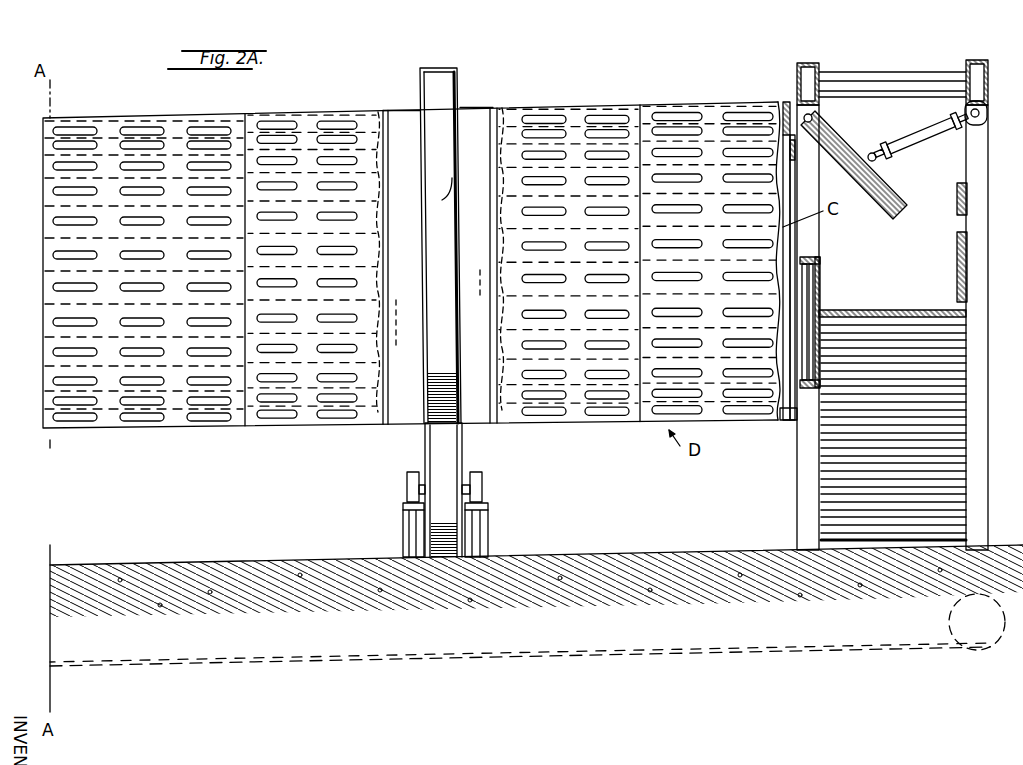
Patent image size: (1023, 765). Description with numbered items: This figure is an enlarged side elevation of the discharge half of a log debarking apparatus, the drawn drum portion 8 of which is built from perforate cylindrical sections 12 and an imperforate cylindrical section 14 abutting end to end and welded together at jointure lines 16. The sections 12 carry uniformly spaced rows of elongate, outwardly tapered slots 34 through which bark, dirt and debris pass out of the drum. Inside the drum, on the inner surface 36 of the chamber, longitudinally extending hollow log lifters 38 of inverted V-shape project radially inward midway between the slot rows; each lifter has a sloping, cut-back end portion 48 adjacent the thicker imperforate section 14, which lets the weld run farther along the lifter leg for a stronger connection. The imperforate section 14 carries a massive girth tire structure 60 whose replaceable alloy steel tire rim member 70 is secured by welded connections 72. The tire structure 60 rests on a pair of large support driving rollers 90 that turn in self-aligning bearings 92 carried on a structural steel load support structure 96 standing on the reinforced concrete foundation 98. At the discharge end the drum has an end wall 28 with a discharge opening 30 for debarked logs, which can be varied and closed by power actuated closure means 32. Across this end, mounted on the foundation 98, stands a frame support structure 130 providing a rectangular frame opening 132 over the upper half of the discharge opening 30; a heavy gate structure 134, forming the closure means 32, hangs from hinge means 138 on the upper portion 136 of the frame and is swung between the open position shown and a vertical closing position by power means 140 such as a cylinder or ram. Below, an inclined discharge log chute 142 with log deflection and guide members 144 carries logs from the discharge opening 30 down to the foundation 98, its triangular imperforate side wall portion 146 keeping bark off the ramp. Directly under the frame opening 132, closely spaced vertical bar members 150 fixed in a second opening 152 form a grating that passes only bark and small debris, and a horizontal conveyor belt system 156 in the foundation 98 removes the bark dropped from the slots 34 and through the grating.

The rotary screen drum 8 is at (75, 203).
The perforate cylindrical section 12 is at (84, 118).
The imperforate cylindrical section 14 is at (402, 114).
The jointure line 16 is at (246, 122).
The end wall 28 is at (788, 100).
The discharge opening 30 is at (789, 177).
The power actuated closure means 32 is at (851, 140).
The slot 34 is at (133, 421).
The inner surface 36 is at (782, 102).
The log lifter 38 is at (385, 245).
The sloping end portion 48 is at (394, 300).
The tire structure 60 is at (443, 64).
The tire rim member 70 is at (440, 157).
The welded connection 72 is at (442, 200).
The support driving roller 90 is at (445, 458).
The self-aligning bearing 92 is at (407, 486).
The load support structure 96 is at (403, 531).
The foundation 98 is at (585, 556).
The frame support structure 130 is at (981, 183).
The frame opening 132 is at (812, 234).
The gate structure 134 is at (877, 163).
The upper portion of frame 136 is at (810, 63).
The hinge means 138 is at (818, 115).
The power means 140 is at (943, 130).
The discharge log chute 142 is at (913, 310).
The log deflection and guide member 144 is at (957, 285).
The side wall portion 146 is at (818, 286).
The bar member 150 is at (808, 302).
The second opening 152 is at (820, 273).
The horizontal conveyor belt system 156 is at (706, 554).